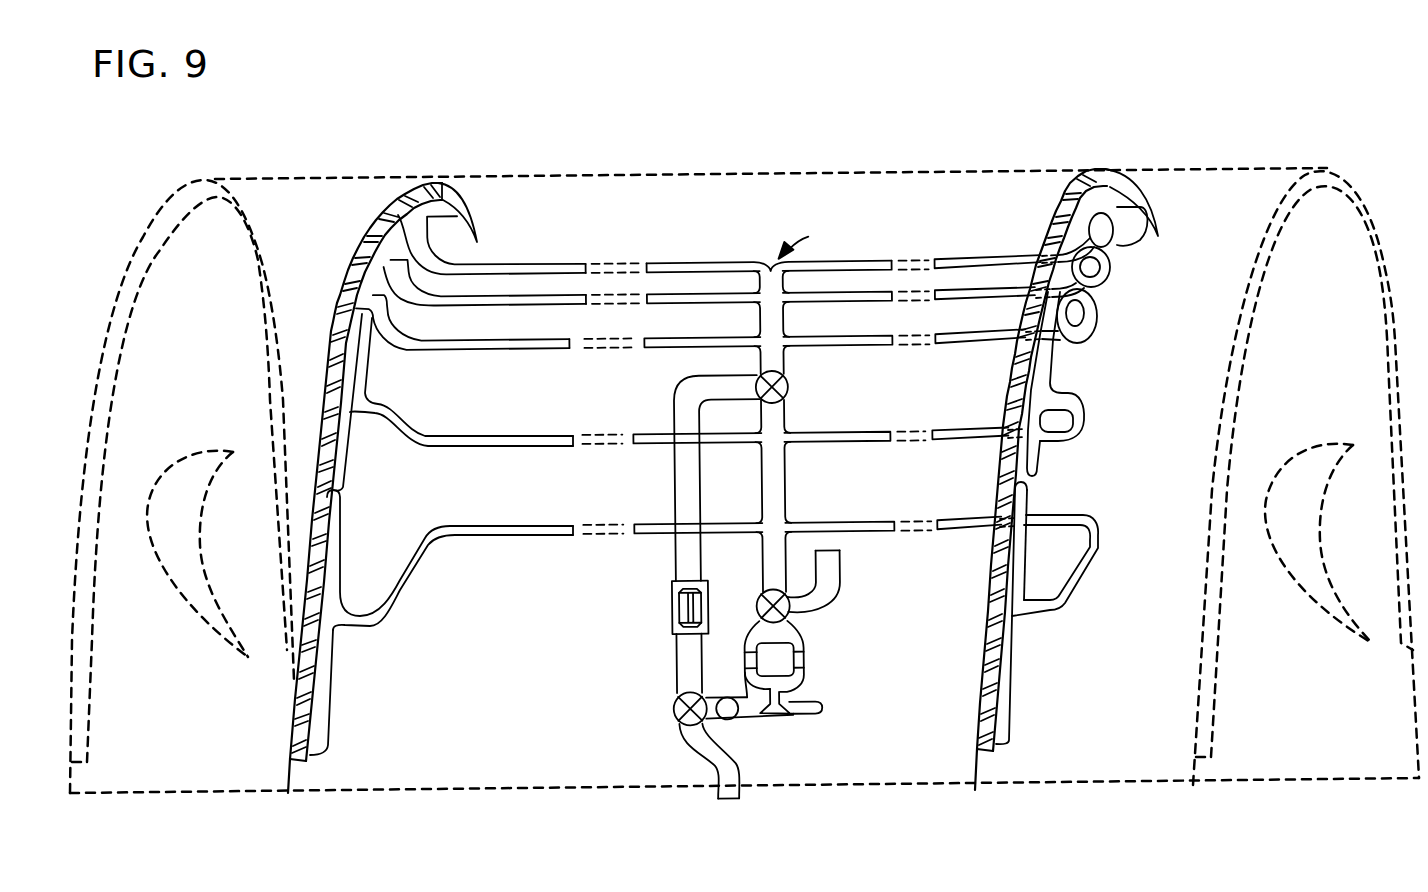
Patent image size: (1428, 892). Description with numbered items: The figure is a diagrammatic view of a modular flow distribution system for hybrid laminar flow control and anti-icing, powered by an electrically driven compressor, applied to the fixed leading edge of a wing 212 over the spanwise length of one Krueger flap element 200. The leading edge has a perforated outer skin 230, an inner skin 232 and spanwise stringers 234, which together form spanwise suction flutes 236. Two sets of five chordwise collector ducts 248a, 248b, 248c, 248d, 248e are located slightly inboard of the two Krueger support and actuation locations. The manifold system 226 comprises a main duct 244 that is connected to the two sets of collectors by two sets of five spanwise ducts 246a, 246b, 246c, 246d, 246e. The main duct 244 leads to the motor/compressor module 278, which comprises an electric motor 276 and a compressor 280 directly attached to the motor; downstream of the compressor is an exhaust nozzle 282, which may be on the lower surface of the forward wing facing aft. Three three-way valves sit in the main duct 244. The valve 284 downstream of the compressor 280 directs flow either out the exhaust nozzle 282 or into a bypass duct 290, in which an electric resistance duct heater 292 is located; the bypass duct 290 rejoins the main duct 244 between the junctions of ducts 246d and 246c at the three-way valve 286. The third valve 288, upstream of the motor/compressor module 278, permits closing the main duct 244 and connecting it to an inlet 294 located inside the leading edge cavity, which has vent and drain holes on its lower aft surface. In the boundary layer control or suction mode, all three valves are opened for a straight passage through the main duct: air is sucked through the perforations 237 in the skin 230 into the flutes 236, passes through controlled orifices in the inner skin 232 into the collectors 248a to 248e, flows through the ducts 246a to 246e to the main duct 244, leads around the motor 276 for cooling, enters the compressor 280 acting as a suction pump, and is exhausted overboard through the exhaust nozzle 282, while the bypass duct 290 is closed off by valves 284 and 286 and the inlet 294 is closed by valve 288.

The Krueger flap element 200 is at (273, 478).
The wing 212 is at (430, 180).
The manifold system 226 is at (816, 238).
The perforated outer skin 230 is at (327, 340).
The inner skin 232 is at (350, 392).
The spanwise stringers 234 is at (342, 310).
The spanwise suction flutes 236 is at (372, 217).
The perforations 237 is at (392, 190).
The main duct 244 is at (786, 494).
The spanwise duct 246a is at (685, 234).
The spanwise duct 246b is at (827, 335).
The spanwise duct 246c is at (675, 348).
The spanwise duct 246d is at (832, 433).
The spanwise duct 246e is at (490, 519).
The chordwise collector duct 248a is at (1140, 240).
The chordwise collector duct 248b is at (1108, 266).
The chordwise collector duct 248c is at (1097, 318).
The chordwise collector duct 248d is at (1045, 385).
The chordwise collector duct 248e is at (1027, 505).
The electric motor 276 is at (802, 657).
The motor/compressor module 278 is at (800, 691).
The compressor 280 is at (796, 714).
The exhaust nozzle 282 is at (735, 798).
The three-way valve 284 is at (669, 709).
The three-way valve 286 is at (789, 386).
The three-way valve 288 is at (788, 608).
The bypass duct 290 is at (671, 484).
The electric resistance duct heater 292 is at (668, 598).
The inlet 294 is at (838, 570).